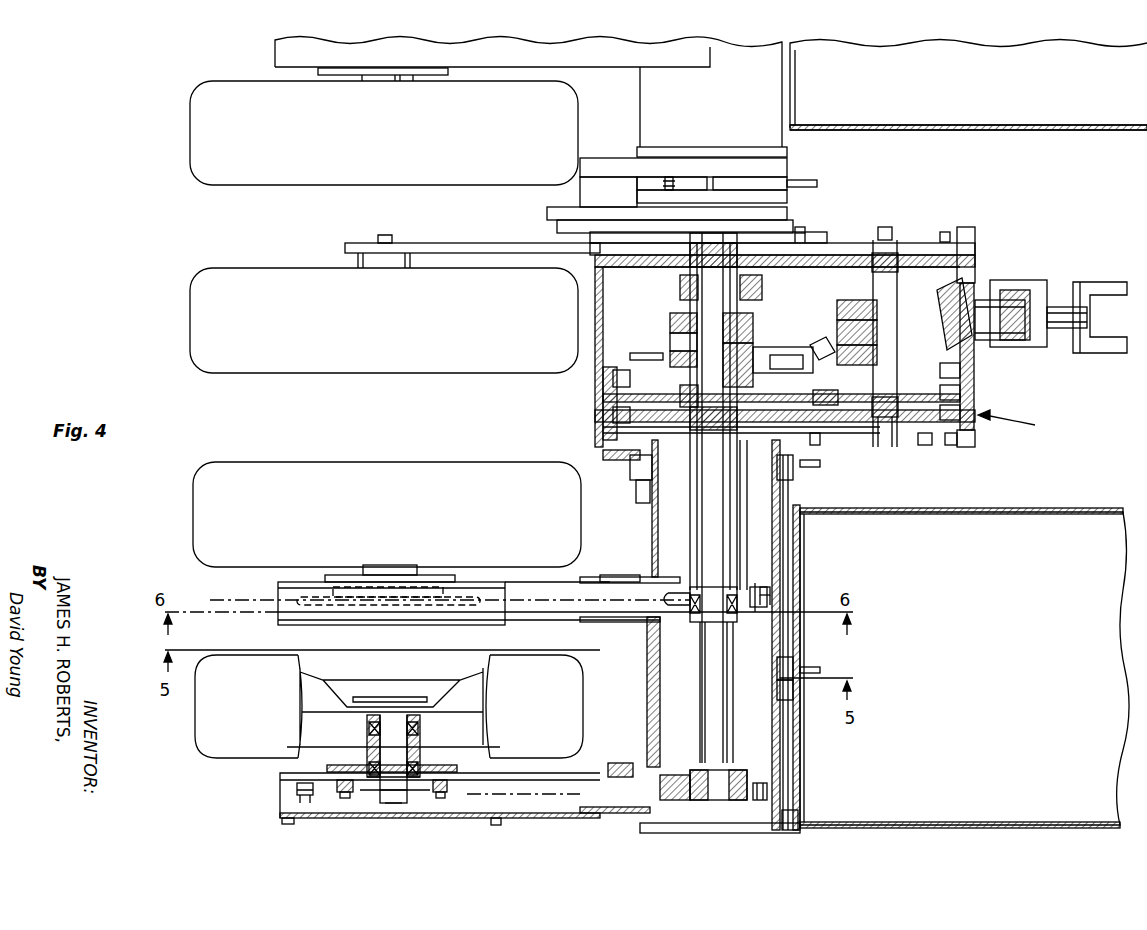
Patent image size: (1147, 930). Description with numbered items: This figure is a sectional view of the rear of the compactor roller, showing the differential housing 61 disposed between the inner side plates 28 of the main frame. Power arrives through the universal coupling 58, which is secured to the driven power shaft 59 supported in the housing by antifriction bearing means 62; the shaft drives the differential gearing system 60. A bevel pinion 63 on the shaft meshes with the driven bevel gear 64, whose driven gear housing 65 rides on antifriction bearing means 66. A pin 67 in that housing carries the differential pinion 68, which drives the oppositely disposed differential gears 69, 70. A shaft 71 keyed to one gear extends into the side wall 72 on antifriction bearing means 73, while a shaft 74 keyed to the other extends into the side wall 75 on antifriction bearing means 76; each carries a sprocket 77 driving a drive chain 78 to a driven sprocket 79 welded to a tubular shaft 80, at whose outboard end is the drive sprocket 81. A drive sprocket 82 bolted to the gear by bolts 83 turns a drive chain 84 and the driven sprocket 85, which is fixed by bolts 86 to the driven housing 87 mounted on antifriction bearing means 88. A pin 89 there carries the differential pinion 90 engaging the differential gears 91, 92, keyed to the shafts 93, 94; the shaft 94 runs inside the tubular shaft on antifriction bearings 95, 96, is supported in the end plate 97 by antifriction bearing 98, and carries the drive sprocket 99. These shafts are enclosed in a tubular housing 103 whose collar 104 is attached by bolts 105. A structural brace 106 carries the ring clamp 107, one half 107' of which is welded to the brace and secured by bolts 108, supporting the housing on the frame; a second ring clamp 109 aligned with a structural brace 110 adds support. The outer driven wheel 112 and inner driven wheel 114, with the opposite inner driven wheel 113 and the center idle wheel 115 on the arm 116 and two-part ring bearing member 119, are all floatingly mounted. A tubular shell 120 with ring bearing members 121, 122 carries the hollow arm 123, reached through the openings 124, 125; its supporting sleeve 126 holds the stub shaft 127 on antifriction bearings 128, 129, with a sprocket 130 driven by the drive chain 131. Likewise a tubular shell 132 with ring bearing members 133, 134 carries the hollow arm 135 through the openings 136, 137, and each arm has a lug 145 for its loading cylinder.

The inner side plate 28 is at (1095, 131).
The second universal coupling 58 is at (1107, 288).
The driven power shaft 59 is at (1052, 312).
The differential gearing system 60 is at (1011, 359).
The differential housing 61 is at (978, 382).
The antifriction bearing means 62 is at (1037, 350).
The bevel pinion 63 is at (993, 352).
The driven bevel gear 64 is at (813, 339).
The driven gear housing 65 is at (853, 318).
The antifriction bearing means 66 is at (857, 301).
The pin 67 is at (853, 331).
The differential pinion 68 is at (843, 346).
The differential gear 69 is at (945, 305).
The differential gear 70 is at (935, 326).
The shaft 71 is at (885, 343).
The side wall 72 is at (827, 233).
The antifriction bearing means 73 is at (883, 227).
The shaft 74 is at (885, 409).
The side wall 75 is at (950, 444).
The antifriction bearing means 76 is at (878, 441).
The sprocket 77 is at (918, 255).
The drive chain 78 is at (975, 245).
The driven sprocket 79 is at (797, 233).
The tubular shaft 80 is at (740, 542).
The drive sprocket 81 is at (742, 610).
The drive sprocket 82 is at (828, 402).
The bolts 83 is at (925, 444).
The drive chain 84 is at (978, 395).
The driven sprocket 85 is at (786, 362).
The bolts 86 is at (660, 362).
The driven housing 87 is at (672, 328).
The antifriction bearing means 88 is at (680, 301).
The pin 89 is at (668, 352).
The differential pinion 90 is at (660, 365).
The differential gear 91 is at (745, 318).
The differential gear 92 is at (748, 337).
The shaft 93 is at (740, 300).
The shaft 94 is at (713, 498).
The antifriction bearing 95 is at (737, 430).
The antifriction bearing 96 is at (692, 612).
The end plate 97 is at (770, 803).
The antifriction bearing 98 is at (580, 798).
The drive sprocket 99 is at (743, 773).
The tubular housing 103 is at (788, 555).
The collar 104 is at (797, 467).
The bolts 105 is at (593, 458).
The structural brace 106 is at (817, 183).
The ring clamp 107 is at (708, 329).
The ring clamp half 107' is at (750, 148).
The bolts 108 is at (665, 180).
The second ring clamp 109 is at (783, 667).
The structural brace 110 is at (822, 667).
The outer driven wheel 112 is at (199, 711).
The inner driven wheel 113 is at (190, 101).
The inner driven wheel 114 is at (199, 511).
The center idle wheel 115 is at (190, 311).
The arm 116 is at (457, 246).
The two-part ring bearing member 119 is at (573, 212).
The tubular shell 120 is at (790, 735).
The ring bearing member 121 is at (785, 687).
The ring bearing member 122 is at (793, 817).
The hollow arm 123 is at (280, 793).
The opening 124 is at (608, 775).
The opening 125 is at (665, 780).
The supporting sleeve 126 is at (420, 742).
The stub shaft 127 is at (393, 747).
The antifriction bearing 128 is at (373, 730).
The antifriction bearing 129 is at (327, 768).
The sprocket 130 is at (387, 607).
The drive chain 131 is at (298, 800).
The tubular shell 132 is at (643, 547).
The ring bearing member 133 is at (650, 495).
The ring bearing member 134 is at (638, 622).
The hollow arm 135 is at (280, 591).
The opening 136 is at (600, 577).
The opening 137 is at (658, 587).
The lug 145 is at (640, 580).